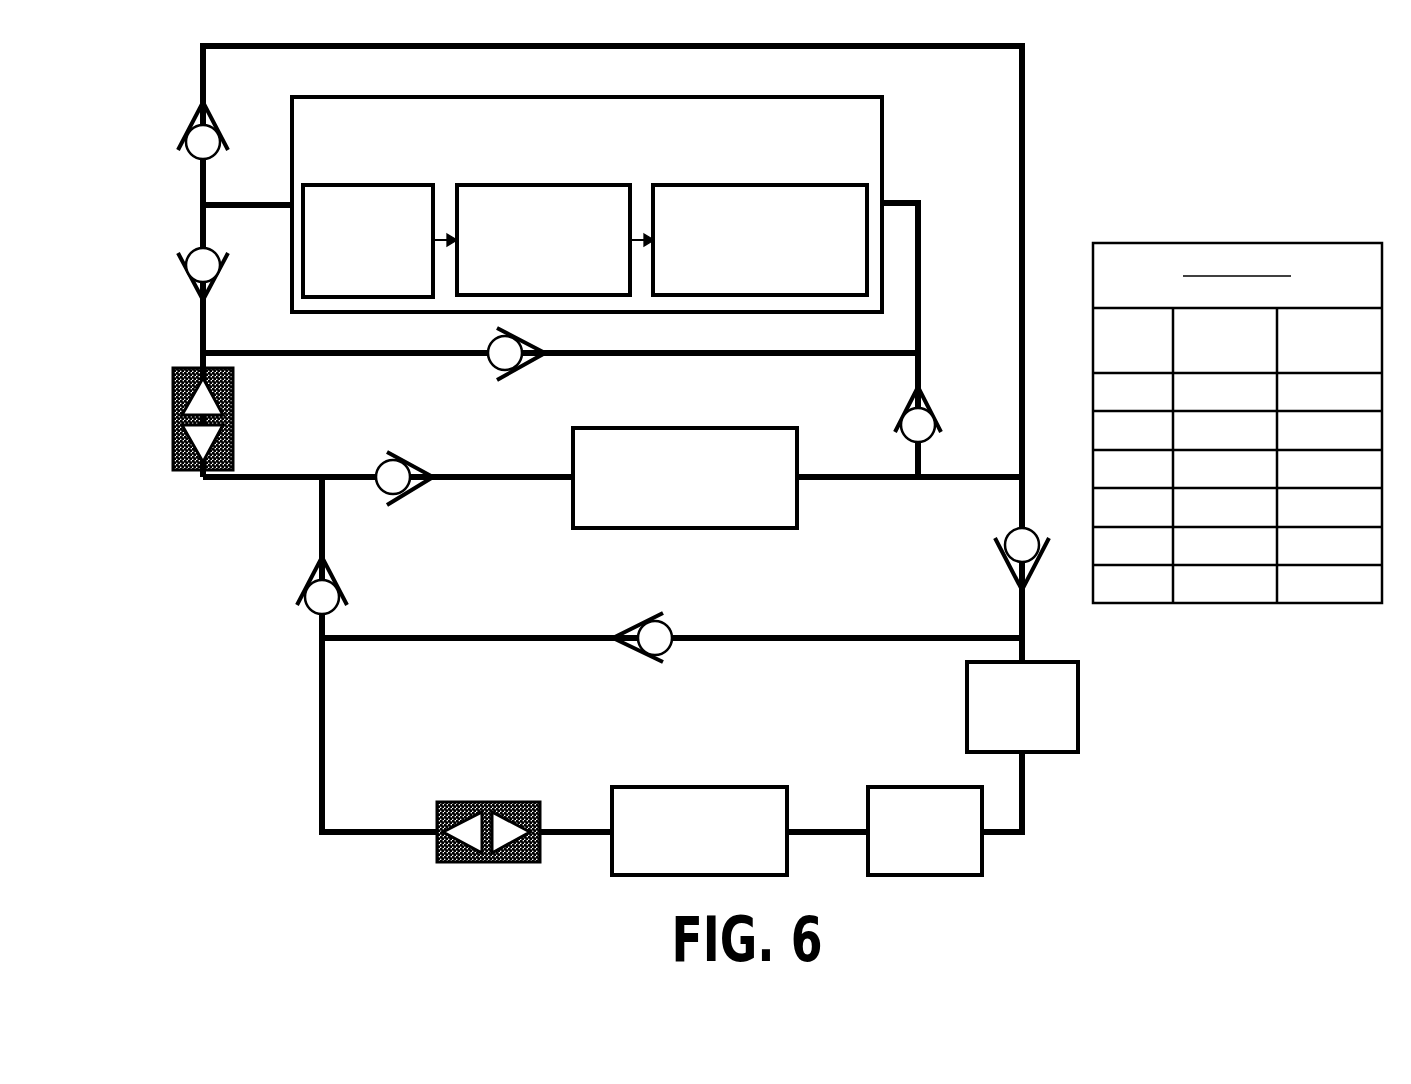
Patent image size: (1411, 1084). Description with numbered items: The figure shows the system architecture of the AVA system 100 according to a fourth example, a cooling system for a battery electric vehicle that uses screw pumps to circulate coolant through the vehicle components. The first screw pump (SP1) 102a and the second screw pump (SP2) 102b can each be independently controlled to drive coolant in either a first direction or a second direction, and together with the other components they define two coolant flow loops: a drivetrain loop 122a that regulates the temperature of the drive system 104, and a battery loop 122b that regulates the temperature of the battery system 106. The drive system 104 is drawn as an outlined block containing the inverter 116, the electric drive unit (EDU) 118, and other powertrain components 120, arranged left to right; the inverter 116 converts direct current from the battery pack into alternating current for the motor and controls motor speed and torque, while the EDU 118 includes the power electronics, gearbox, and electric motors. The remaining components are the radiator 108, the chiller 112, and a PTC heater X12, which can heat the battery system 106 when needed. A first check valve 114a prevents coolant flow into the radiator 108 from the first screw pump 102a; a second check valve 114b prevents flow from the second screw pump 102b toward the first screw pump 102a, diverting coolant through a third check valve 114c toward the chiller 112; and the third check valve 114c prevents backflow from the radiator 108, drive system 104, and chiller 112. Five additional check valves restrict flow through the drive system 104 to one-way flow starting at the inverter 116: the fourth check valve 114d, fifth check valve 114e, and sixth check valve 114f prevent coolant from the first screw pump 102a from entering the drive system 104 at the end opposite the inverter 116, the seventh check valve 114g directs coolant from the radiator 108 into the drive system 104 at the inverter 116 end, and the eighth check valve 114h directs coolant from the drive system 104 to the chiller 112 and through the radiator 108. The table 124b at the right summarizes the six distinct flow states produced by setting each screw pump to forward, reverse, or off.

The AVA system 100 is at (628, 460).
The first screw pump (SP1) 102a is at (168, 419).
The second screw pump (SP2) 102b is at (488, 794).
The drive system 104 is at (587, 204).
The battery system 106 is at (699, 831).
The radiator 108 is at (685, 478).
The chiller 112 is at (1022, 707).
The PTC heater X12 is at (925, 831).
The first check valve 114a is at (408, 449).
The second check valve 114b is at (367, 585).
The third check valve 114c is at (642, 675).
The fourth check valve 114d is at (159, 273).
The fifth check valve 114e is at (159, 131).
The sixth check valve 114f is at (513, 391).
The seventh check valve 114g is at (877, 415).
The eighth check valve 114h is at (962, 565).
The inverter 116 is at (368, 241).
The electric drive unit (EDU) 118 is at (543, 240).
The other powertrain components 120 is at (760, 240).
The drivetrain loop 122a is at (1077, 190).
The battery loop 122b is at (213, 591).
The table 124b is at (1237, 423).